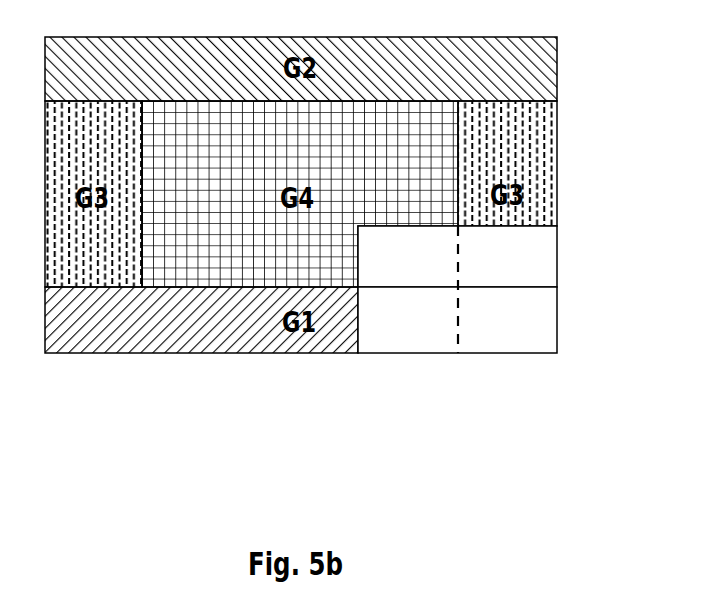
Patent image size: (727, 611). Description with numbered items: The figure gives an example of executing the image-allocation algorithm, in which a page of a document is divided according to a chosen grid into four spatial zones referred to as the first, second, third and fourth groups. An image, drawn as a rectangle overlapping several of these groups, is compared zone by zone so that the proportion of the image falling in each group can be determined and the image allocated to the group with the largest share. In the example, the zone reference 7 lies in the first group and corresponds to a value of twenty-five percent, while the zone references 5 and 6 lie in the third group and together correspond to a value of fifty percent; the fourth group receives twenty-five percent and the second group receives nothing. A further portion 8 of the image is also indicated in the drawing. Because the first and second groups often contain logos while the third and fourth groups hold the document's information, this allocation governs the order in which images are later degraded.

The zone reference 5 is at (523, 259).
The zone reference 6 is at (526, 322).
The zone reference 7 is at (417, 325).
The upper left sub-region 8 is at (398, 263).